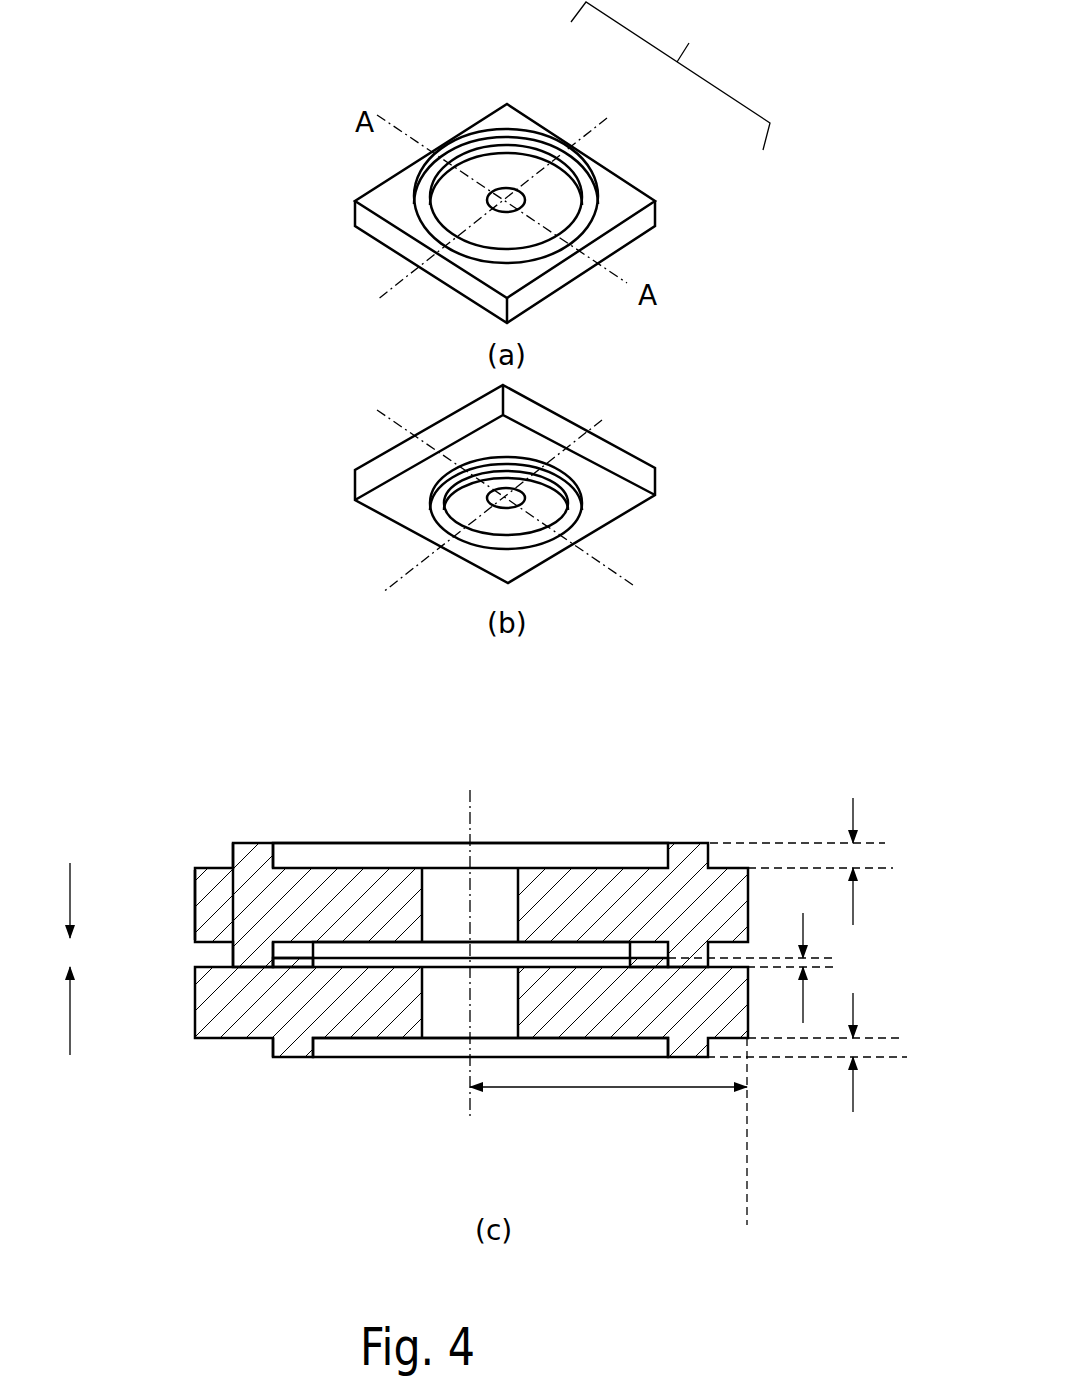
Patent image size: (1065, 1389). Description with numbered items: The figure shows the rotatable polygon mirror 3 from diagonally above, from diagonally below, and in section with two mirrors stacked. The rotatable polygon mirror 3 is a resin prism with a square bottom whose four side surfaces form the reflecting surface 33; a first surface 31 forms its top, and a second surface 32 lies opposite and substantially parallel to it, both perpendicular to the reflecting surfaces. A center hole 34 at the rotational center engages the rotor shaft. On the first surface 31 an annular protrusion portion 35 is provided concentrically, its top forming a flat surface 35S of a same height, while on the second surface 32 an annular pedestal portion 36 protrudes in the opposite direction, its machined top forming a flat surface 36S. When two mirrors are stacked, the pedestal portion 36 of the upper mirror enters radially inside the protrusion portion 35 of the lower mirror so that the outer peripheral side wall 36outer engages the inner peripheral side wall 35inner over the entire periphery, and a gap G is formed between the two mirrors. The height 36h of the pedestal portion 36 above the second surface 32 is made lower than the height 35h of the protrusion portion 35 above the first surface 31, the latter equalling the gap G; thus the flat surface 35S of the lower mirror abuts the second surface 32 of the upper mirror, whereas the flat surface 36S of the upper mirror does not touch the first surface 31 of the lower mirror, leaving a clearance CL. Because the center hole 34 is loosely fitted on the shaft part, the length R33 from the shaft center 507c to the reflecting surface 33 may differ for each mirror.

The rotatable polygon mirror 3 is at (670, 76).
The first surface 31 is at (617, 193).
The second surface 32 is at (608, 500).
The reflecting surface 33 is at (623, 238).
The center hole 34 is at (503, 188).
The protrusion portion 35 is at (443, 150).
The pedestal portion 36 is at (532, 543).
The flat surface of protrusion portion 35S is at (427, 198).
The flat surface of pedestal portion 36S is at (435, 522).
The inner peripheral side wall of protrusion portion 35inner is at (268, 955).
The outer peripheral side wall of pedestal portion 36outer is at (275, 1048).
The center of rotating shaft part 507c is at (476, 933).
The length from center to reflecting surface R33 is at (608, 1131).
The height of protrusion portion 35h is at (801, 843).
The height of pedestal portion 36h is at (787, 1072).
The clearance CL is at (751, 953).
The gap G is at (69, 939).